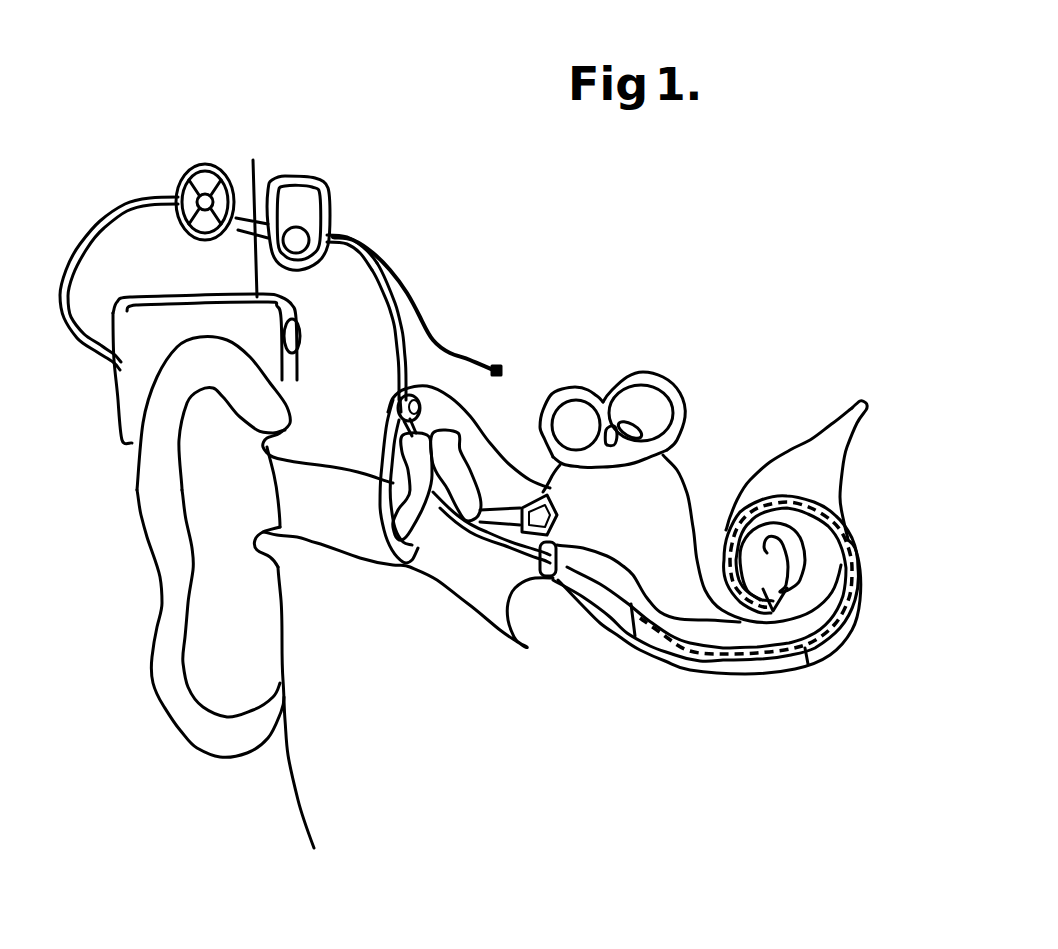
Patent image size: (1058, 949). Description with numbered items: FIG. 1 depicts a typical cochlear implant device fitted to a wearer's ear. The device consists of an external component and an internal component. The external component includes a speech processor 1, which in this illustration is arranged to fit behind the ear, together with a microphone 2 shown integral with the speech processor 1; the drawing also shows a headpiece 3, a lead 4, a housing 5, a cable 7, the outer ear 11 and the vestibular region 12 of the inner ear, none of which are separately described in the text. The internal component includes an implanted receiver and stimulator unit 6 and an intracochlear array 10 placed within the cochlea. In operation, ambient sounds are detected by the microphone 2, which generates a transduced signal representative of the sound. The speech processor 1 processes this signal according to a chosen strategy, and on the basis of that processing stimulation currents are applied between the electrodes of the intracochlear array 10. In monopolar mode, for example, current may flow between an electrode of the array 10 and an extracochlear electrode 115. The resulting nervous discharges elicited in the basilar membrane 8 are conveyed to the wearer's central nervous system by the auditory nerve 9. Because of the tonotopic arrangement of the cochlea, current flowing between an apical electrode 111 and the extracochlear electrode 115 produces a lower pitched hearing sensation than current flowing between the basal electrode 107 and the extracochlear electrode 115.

The speech processor 1 is at (133, 378).
The microphone 2 is at (300, 335).
The transmitter coil headpiece 3 is at (206, 194).
The coil lead 4 is at (248, 222).
The implanted receiver-stimulator 5 is at (325, 197).
The implanted receiver and stimulator unit 6 is at (350, 236).
The lead cable 7 is at (405, 313).
The basilar membrane 8 is at (622, 553).
The auditory nerve 9 is at (787, 450).
The intracochlear array 10 is at (683, 652).
The outer ear (pinna) 11 is at (175, 690).
The vestibular system 12 is at (687, 463).
The basal electrode 107 is at (628, 637).
The apical electrode 111 is at (774, 606).
The extracochlear electrode 115 is at (505, 358).